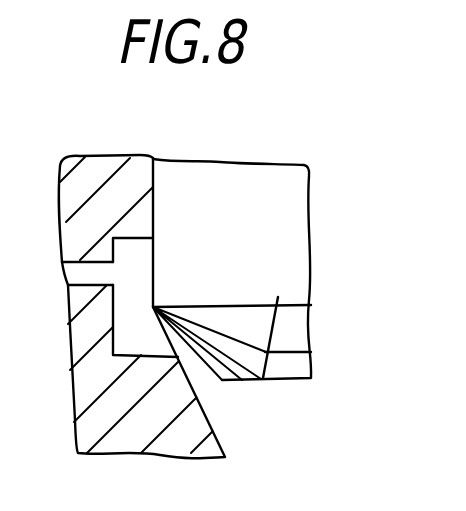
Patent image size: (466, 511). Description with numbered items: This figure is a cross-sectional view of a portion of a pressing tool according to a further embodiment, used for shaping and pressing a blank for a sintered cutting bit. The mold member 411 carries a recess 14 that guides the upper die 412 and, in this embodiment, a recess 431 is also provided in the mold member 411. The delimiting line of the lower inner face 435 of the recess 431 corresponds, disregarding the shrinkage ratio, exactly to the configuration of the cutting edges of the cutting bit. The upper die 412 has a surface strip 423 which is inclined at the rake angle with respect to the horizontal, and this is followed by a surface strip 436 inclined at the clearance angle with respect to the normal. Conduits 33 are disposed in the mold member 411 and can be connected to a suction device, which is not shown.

The mold member 411 is at (94, 172).
The upper die 412 is at (258, 178).
The recess 14 is at (182, 175).
The recess 431 is at (135, 247).
The surface strip 436 is at (288, 327).
The conduits 33 is at (82, 268).
The lower inner face 435 is at (127, 338).
The surface strip 423 is at (292, 368).